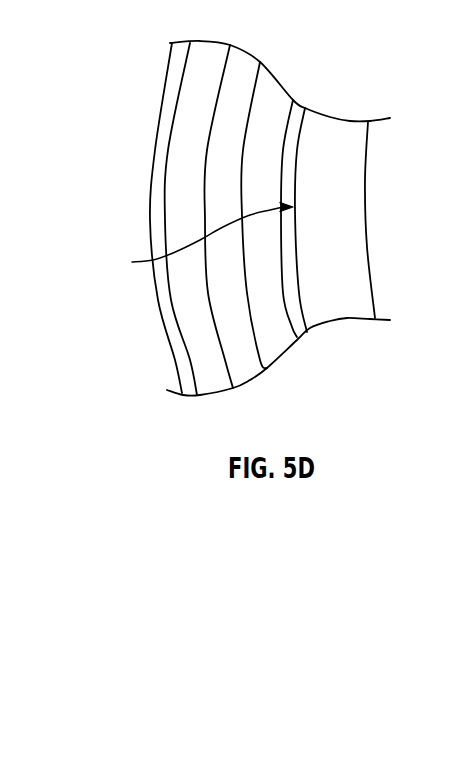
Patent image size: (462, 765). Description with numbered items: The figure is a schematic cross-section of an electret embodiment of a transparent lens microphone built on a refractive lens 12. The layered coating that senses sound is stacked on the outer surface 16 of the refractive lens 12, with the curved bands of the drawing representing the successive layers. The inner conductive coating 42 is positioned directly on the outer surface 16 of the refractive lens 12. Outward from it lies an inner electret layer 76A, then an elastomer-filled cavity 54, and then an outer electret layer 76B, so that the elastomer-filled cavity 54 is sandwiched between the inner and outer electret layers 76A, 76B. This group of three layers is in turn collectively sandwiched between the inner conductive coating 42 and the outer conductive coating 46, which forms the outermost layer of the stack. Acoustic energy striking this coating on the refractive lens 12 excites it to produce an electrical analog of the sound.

The refractive lens 12 is at (340, 205).
The outer surface 16 is at (199, 240).
The inner conductive coating 42 is at (293, 316).
The outer conductive coating 46 is at (170, 342).
The elastomer-filled cavity 54 is at (227, 265).
The inner electret layer 76A is at (280, 130).
The outer electret layer 76B is at (190, 103).